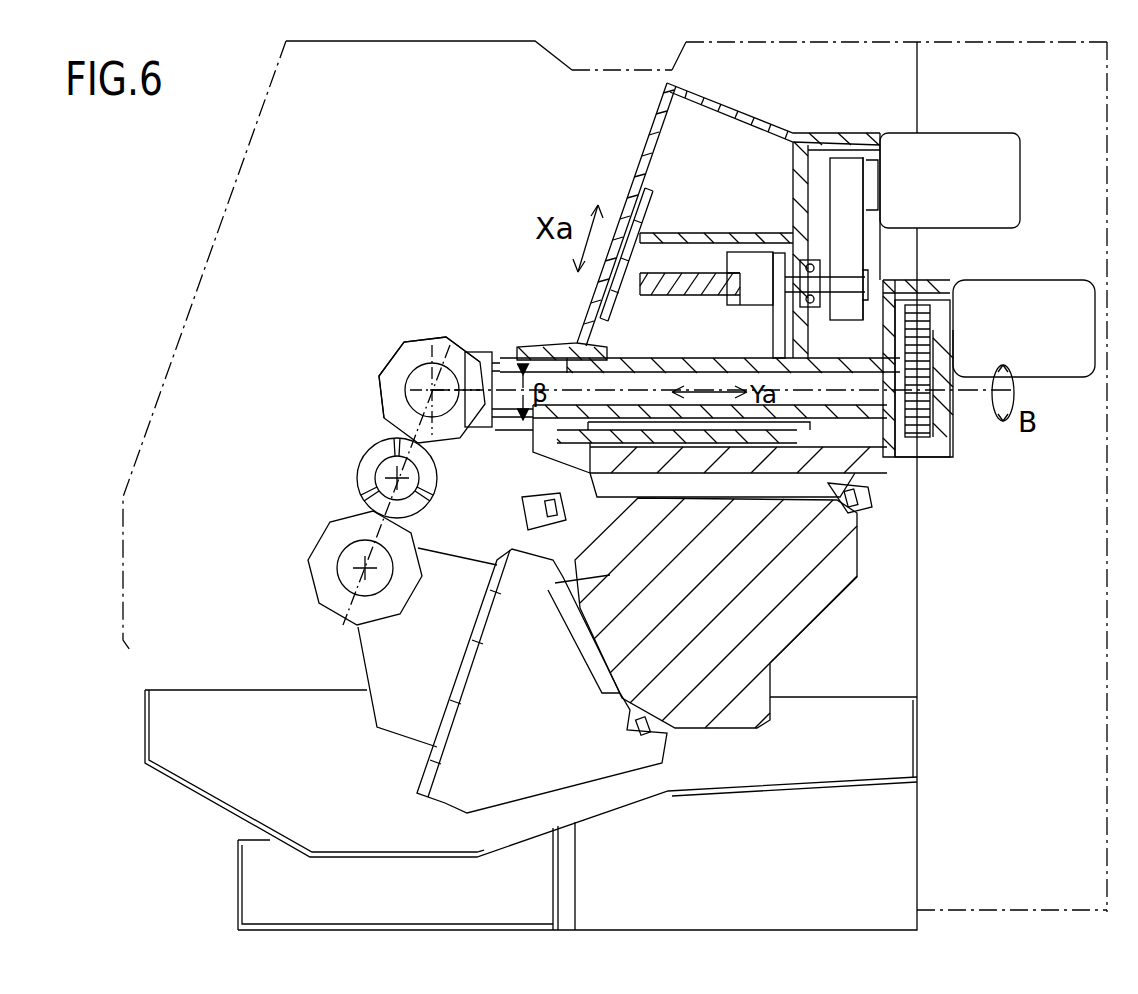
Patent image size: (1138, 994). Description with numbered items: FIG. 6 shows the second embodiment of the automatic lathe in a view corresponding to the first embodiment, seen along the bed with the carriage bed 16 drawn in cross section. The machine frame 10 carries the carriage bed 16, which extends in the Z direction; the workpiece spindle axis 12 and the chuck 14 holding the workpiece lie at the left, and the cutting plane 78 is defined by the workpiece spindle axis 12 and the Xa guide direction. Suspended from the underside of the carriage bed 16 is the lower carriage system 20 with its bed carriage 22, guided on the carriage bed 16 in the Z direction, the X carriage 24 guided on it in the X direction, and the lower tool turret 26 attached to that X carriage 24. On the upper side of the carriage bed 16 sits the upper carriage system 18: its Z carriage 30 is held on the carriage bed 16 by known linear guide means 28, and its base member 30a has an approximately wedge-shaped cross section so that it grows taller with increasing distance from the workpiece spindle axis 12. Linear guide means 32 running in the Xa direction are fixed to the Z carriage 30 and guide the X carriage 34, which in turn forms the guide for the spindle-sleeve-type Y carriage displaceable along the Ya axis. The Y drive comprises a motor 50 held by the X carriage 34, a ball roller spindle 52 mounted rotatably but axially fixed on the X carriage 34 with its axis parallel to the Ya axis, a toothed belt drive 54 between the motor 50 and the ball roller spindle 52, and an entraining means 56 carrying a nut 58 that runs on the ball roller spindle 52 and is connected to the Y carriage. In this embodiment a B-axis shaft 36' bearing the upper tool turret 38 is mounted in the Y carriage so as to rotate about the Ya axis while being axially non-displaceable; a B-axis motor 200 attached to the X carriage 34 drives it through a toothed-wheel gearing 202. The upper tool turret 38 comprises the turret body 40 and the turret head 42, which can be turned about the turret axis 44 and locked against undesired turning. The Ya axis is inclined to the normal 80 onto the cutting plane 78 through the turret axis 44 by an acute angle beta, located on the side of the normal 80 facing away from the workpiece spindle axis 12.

The machine frame 10 is at (928, 812).
The workpiece spindle axis 12 is at (378, 474).
The chuck 14 is at (362, 448).
The carriage bed 16 is at (856, 598).
The upper carriage system 18 is at (647, 152).
The lower carriage system 20 is at (403, 771).
The bed carriage 22 is at (447, 807).
The X carriage 24 is at (383, 690).
The lower tool turret 26 is at (322, 546).
The linear guide means 28 is at (560, 503).
The Z carriage 30 is at (897, 467).
The base member 30a is at (872, 486).
The linear guide means 32 is at (636, 208).
The X carriage 34 is at (604, 306).
The B-axis shaft 36' is at (496, 354).
The upper tool turret 38 is at (395, 358).
The turret body 40 is at (430, 336).
The turret head 42 is at (406, 353).
The turret axis 44 is at (404, 378).
The motor 50 is at (1000, 143).
The ball roller spindle 52 is at (677, 272).
The toothed belt drive 54 is at (860, 252).
The entraining means 56 is at (730, 258).
The nut 58 is at (758, 280).
The cutting plane 78 is at (347, 598).
The normal 80 is at (460, 400).
The motor 200 is at (1062, 315).
The toothed-wheel gearing 202 is at (963, 378).